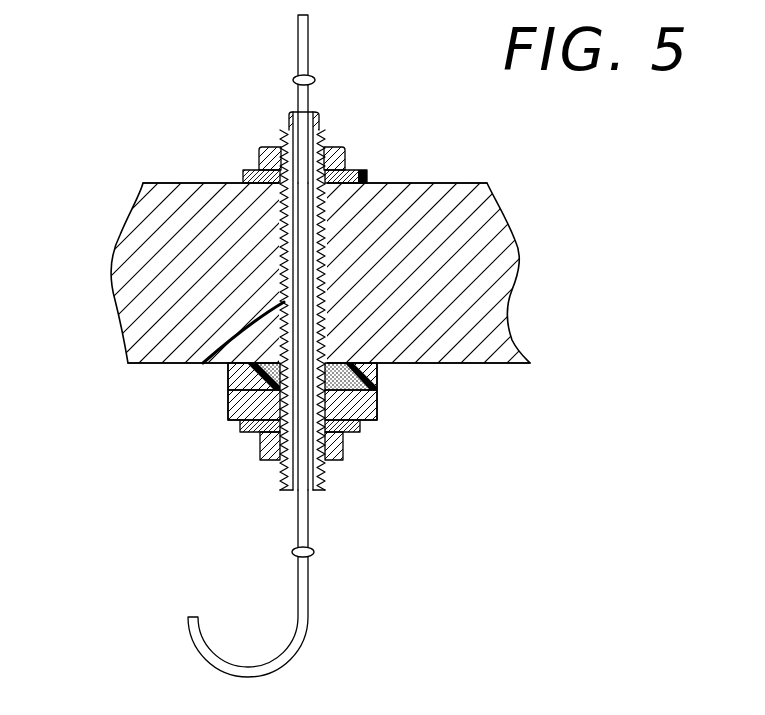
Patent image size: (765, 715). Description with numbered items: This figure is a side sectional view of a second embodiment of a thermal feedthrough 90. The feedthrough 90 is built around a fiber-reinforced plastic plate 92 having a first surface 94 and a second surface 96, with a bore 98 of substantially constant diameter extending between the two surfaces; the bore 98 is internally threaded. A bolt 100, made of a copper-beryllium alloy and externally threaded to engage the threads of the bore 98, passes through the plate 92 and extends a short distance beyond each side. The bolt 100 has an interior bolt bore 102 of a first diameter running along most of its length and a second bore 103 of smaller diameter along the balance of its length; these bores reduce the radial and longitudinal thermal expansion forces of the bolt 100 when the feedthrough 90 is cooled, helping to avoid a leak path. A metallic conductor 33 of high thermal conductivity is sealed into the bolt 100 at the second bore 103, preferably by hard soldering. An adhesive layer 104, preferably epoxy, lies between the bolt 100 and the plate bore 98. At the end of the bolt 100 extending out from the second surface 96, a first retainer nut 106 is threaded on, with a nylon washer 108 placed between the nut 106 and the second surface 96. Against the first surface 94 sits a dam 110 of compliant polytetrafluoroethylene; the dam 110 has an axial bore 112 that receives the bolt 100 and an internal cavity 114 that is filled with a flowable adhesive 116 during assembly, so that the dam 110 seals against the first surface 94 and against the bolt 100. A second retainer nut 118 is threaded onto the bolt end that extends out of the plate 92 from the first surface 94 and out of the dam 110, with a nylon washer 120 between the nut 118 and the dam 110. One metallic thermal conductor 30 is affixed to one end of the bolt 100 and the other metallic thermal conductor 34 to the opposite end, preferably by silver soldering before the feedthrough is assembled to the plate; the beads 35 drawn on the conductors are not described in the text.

The metallic thermal conductor 30 is at (308, 597).
The metallic conductor 33 is at (298, 97).
The metallic thermal conductor 34 is at (312, 34).
The bead on rod 35 is at (320, 80).
The feedthrough 90 is at (460, 418).
The fiber-reinforced plastic plate 92 is at (127, 290).
The first surface 94 is at (503, 365).
The second surface 96 is at (143, 181).
The bore 98 is at (322, 189).
The bolt 100 is at (203, 363).
The interior bolt bore 102 is at (283, 201).
The second bore 103 is at (289, 120).
The adhesive layer 104 is at (287, 263).
The nut 106 is at (344, 150).
The nylon washer 108 is at (359, 174).
The dam 110 is at (228, 420).
The axial bore 112 is at (378, 405).
The internal cavity 114 is at (228, 388).
The flowable adhesive 116 is at (378, 382).
The nut 118 is at (343, 458).
The nylon washer 120 is at (360, 428).